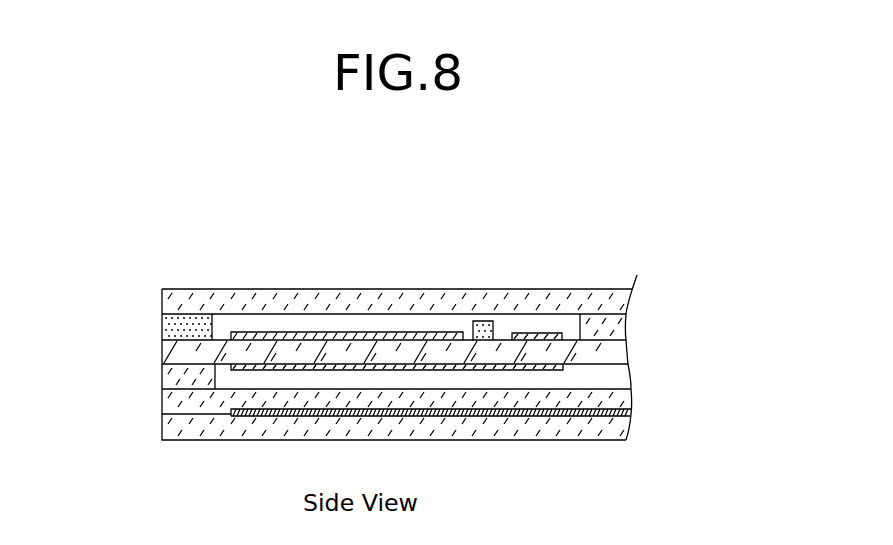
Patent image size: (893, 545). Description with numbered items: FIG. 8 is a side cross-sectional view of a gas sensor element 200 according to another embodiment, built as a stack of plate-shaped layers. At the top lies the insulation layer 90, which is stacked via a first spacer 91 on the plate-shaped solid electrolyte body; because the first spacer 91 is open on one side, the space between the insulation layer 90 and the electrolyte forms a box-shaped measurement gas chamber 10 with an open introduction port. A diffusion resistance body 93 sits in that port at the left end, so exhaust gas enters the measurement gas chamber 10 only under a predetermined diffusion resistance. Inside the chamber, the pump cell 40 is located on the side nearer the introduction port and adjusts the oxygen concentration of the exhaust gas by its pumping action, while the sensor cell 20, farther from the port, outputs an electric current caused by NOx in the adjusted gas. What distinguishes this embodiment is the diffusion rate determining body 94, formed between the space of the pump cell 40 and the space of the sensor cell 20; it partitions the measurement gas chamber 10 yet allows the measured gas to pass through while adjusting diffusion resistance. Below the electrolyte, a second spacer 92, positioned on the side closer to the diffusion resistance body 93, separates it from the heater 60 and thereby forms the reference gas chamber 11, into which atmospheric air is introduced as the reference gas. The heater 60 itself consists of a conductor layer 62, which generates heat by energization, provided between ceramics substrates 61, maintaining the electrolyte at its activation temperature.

The gas sensor element 200 is at (461, 203).
The measurement gas chamber 10 is at (243, 325).
The reference gas chamber 11 is at (227, 378).
The sensor cell 20 is at (521, 330).
The pump cell 40 is at (362, 332).
The heater 60 is at (155, 413).
The ceramics substrates 61 is at (623, 396).
The conductor layer 62 is at (605, 418).
The insulation layer 90 is at (620, 300).
The first spacer 91 is at (597, 323).
The second spacer 92 is at (190, 378).
The diffusion resistance body 93 is at (183, 328).
The diffusion rate determining body 94 is at (483, 325).